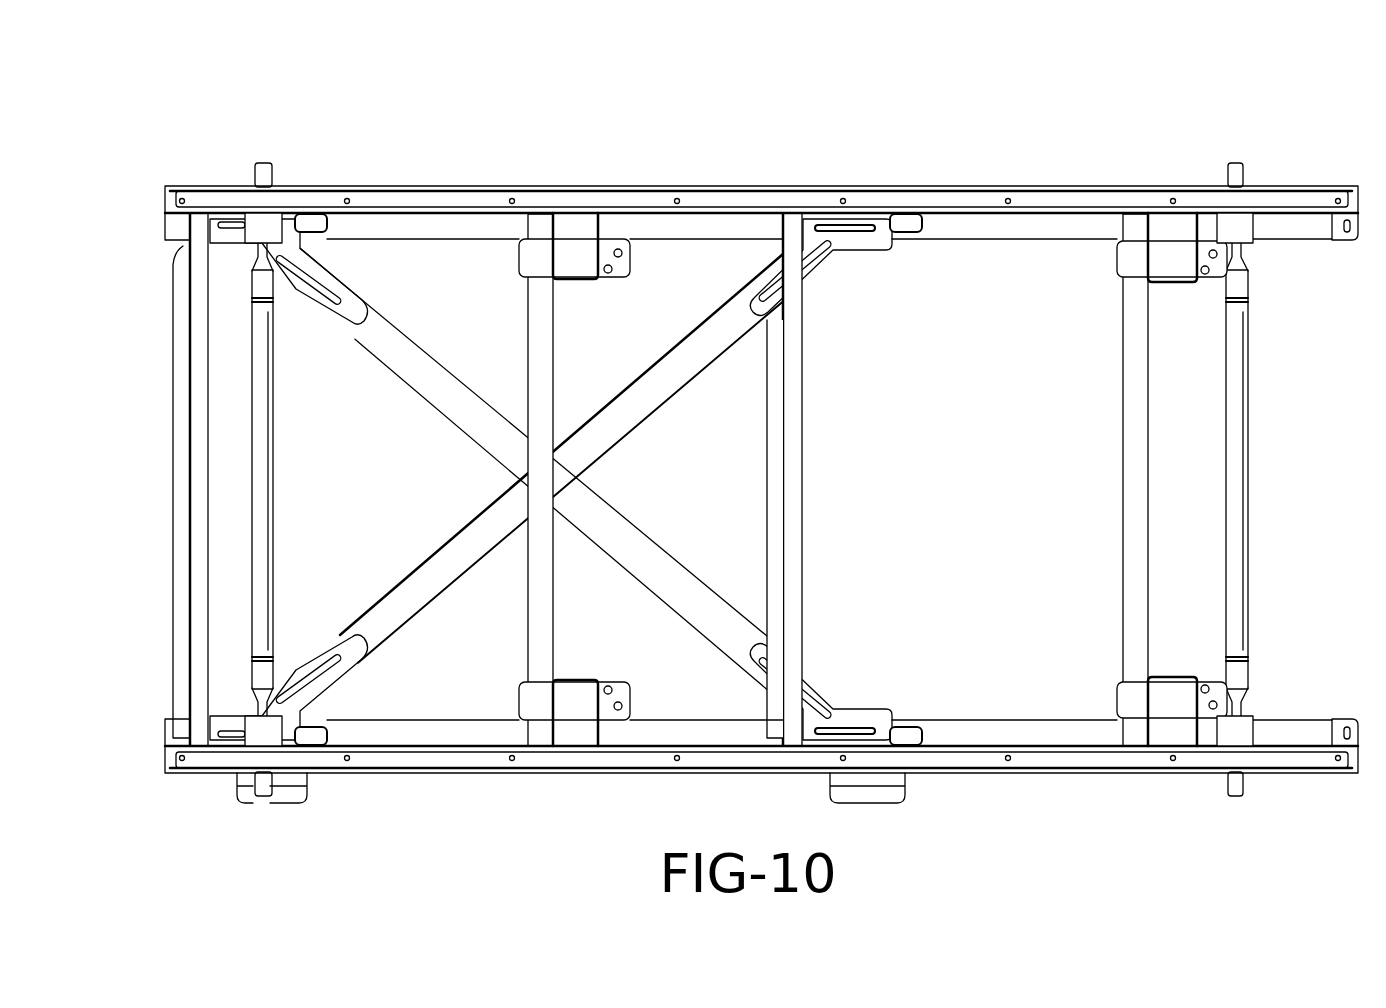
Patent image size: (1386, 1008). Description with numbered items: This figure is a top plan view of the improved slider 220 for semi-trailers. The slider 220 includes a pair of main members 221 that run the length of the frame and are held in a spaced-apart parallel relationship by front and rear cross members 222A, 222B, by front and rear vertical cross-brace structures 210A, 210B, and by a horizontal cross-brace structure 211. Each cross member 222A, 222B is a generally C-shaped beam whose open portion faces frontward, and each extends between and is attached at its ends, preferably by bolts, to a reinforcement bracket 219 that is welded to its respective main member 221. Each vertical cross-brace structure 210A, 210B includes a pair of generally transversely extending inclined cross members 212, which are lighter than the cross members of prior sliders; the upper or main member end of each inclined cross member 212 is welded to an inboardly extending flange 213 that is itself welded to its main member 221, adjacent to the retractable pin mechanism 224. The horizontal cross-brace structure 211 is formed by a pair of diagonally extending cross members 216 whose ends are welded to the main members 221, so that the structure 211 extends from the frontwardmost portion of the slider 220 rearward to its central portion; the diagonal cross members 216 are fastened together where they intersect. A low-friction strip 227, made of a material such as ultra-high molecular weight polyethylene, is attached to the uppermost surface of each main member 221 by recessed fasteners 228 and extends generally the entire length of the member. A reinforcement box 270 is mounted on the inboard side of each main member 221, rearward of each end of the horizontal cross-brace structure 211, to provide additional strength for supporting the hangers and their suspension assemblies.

The slider 220 is at (535, 153).
The main member 221 is at (440, 186).
The low-friction strip 227 is at (1292, 205).
The recessed fastener 228 is at (1336, 198).
The inboardly extending flange 213 is at (212, 214).
The reinforcement box 270 is at (348, 205).
The reinforcement bracket 219 is at (618, 214).
The front cross member 222A is at (553, 331).
The rear cross member 222B is at (1121, 472).
The retractable pin mechanism 224 is at (270, 429).
The inclined cross member 212 is at (181, 292).
The front vertical cross-brace structure 210A is at (172, 451).
The rear vertical cross-brace structure 210B is at (800, 545).
The diagonal cross member 216 is at (420, 372).
The horizontal cross-brace structure 211 is at (640, 527).